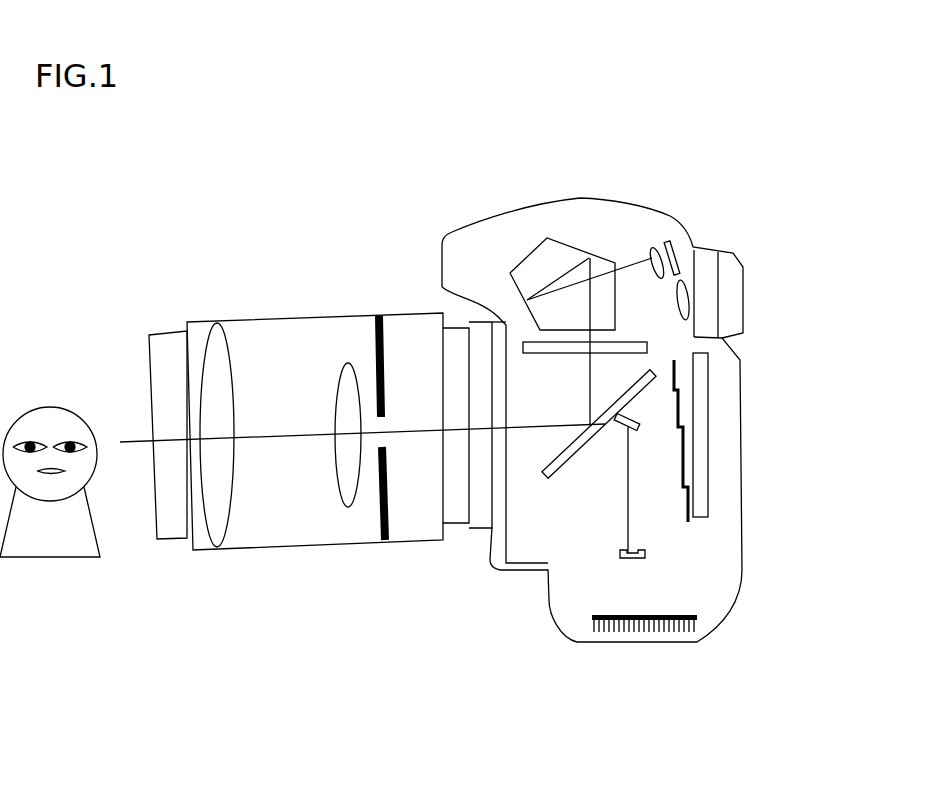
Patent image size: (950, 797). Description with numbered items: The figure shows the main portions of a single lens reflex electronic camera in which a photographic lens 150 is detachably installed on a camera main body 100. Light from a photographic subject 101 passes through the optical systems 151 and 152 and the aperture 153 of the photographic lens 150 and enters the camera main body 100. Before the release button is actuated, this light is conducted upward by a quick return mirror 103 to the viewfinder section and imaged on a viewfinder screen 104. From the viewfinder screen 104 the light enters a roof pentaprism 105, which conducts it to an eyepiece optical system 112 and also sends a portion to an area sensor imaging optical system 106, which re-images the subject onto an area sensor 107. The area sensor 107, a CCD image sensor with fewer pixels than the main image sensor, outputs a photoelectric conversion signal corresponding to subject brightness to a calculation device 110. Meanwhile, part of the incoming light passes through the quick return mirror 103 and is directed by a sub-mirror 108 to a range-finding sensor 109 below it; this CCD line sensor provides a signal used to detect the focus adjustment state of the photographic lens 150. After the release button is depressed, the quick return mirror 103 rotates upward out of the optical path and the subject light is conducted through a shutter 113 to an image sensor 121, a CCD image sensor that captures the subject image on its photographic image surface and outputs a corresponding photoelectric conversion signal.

The camera main body 100 is at (639, 650).
The photographic subject 101 is at (55, 398).
The quick return mirror 103 is at (605, 435).
The viewfinder screen 104 is at (573, 347).
The roof pentaprism 105 is at (537, 273).
The area sensor imaging optical system 106 is at (648, 247).
The area sensor 107 is at (668, 233).
The sub-mirror 108 is at (647, 432).
The range-finding sensor 109 is at (657, 563).
The calculation device 110 is at (587, 622).
The eyepiece optical system 112 is at (690, 293).
The shutter 113 is at (695, 528).
The image sensor 121 is at (700, 392).
The photographic lens 150 is at (270, 550).
The optical system 151 is at (217, 403).
The optical system 152 is at (347, 390).
The aperture 153 is at (387, 362).